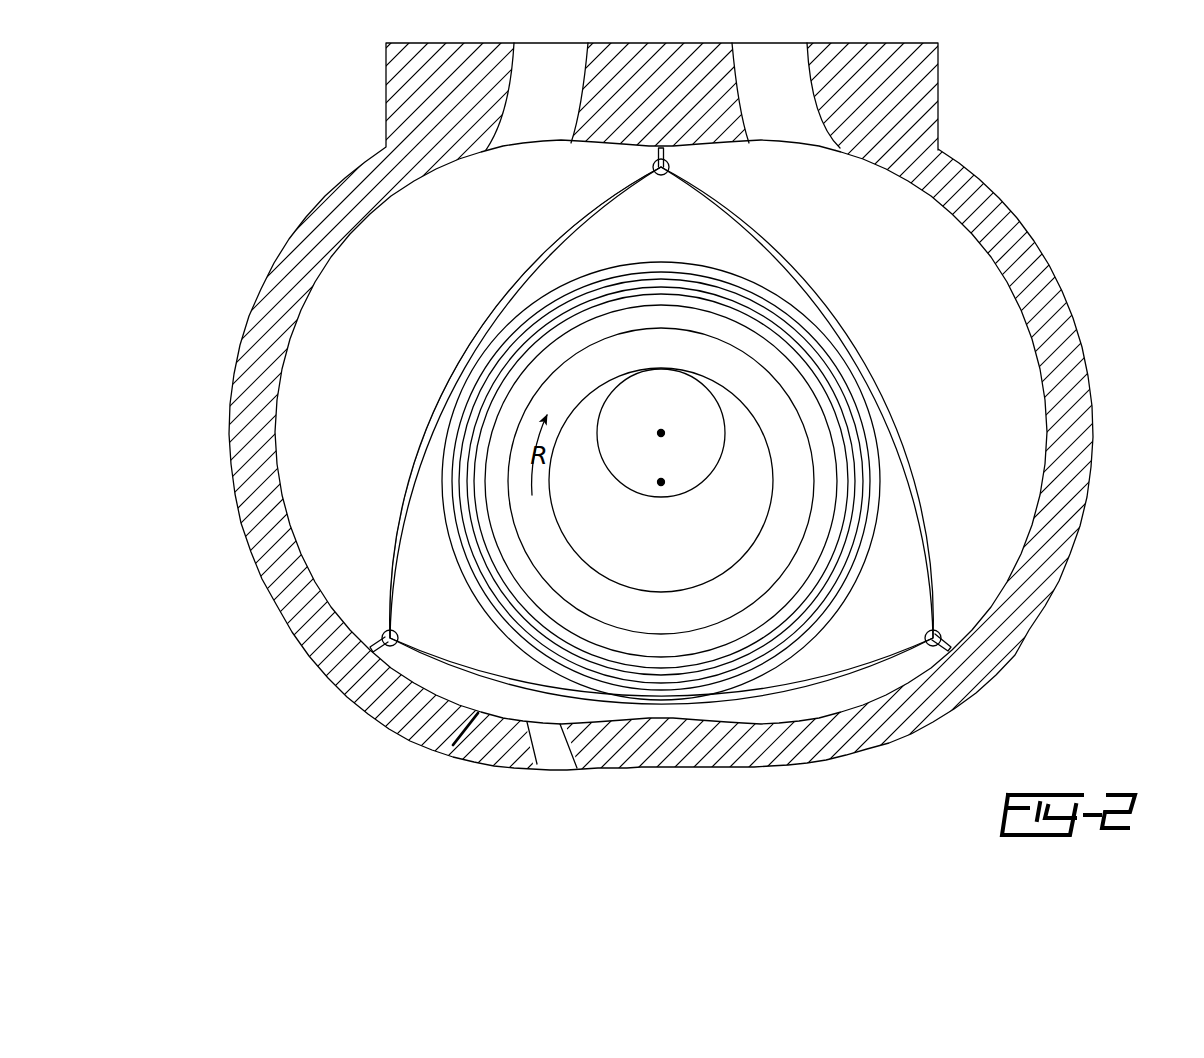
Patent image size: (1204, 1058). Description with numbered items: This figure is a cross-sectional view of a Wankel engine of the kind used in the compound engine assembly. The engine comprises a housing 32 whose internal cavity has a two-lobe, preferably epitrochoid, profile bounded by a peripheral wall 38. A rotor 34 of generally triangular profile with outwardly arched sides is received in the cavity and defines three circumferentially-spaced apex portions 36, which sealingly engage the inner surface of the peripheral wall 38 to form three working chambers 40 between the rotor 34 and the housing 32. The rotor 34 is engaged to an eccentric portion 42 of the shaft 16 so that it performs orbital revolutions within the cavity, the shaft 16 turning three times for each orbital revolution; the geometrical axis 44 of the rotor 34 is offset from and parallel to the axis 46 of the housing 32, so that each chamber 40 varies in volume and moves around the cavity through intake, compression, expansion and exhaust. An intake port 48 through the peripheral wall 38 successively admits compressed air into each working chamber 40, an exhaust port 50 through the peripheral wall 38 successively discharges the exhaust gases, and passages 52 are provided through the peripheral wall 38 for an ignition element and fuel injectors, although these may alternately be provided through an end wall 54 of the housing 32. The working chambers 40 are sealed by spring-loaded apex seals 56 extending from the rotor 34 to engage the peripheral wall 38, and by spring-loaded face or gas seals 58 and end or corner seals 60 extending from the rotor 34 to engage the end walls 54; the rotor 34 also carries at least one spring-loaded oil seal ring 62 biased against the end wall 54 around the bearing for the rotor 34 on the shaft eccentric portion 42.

The shaft 16 is at (692, 475).
The housing 32 is at (602, 450).
The rotor 34 is at (686, 476).
The apex portions 36 is at (953, 655).
The peripheral wall 38 is at (1047, 307).
The working chambers 40 is at (384, 349).
The eccentric portion 42 is at (683, 558).
The geometrical axis 44 is at (661, 482).
The axis 46 is at (661, 433).
The intake port 48 is at (785, 117).
The exhaust port 50 is at (537, 117).
The passages 52 is at (550, 748).
The end wall 54 is at (1012, 497).
The apex seals 56 is at (372, 652).
The face seals 58 is at (397, 543).
The corner seals 60 is at (380, 635).
The oil seal ring 62 is at (777, 633).